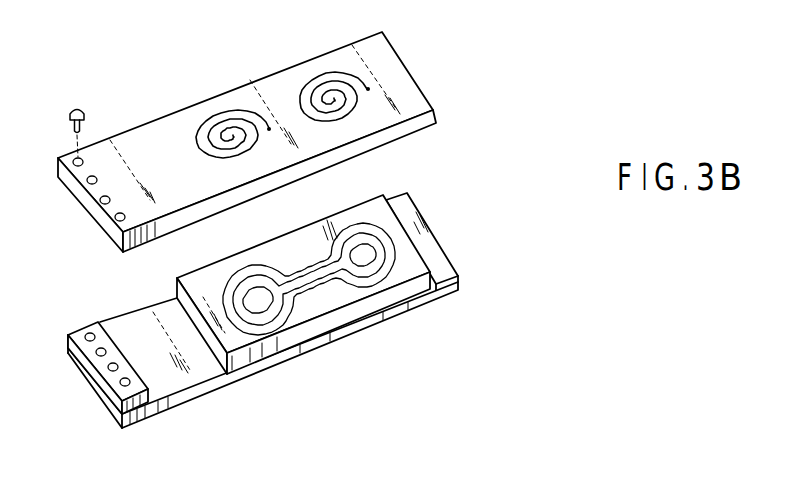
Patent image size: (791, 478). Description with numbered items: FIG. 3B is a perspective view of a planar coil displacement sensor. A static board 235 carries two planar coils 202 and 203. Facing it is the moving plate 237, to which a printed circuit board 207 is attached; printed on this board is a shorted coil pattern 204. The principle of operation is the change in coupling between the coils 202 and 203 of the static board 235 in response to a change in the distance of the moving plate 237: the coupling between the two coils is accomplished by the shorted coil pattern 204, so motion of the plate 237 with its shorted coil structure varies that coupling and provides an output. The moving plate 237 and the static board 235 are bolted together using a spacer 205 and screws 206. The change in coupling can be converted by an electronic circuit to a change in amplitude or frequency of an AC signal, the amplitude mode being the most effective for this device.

The planar coil 202 is at (216, 110).
The planar coil 203 is at (368, 88).
The shorted coil pattern 204 is at (286, 313).
The spacer 205 is at (143, 402).
The screw 206 is at (70, 117).
The printed circuit board 207 is at (400, 233).
The static board 235 is at (402, 98).
The moving plate 237 is at (457, 283).